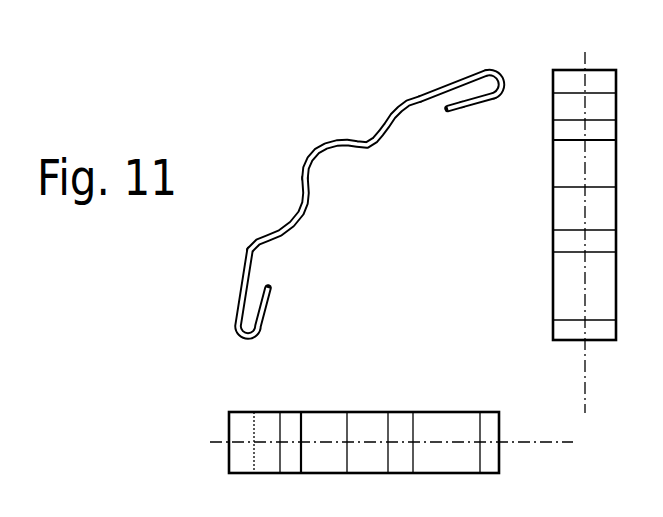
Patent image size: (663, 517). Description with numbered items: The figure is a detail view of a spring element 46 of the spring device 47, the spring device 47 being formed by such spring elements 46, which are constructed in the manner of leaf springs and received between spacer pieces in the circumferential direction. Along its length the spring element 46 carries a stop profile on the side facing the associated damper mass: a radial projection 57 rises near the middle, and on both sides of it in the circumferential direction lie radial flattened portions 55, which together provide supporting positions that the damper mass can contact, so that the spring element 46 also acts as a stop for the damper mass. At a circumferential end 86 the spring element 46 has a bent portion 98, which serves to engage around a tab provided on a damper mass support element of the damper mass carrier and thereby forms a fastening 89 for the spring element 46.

The spring element 46 is at (401, 102).
The spring device 47 is at (254, 252).
The radial flattened portion 55 is at (241, 277).
The radial projection 57 is at (307, 156).
The circumferential end 86 is at (502, 78).
The fastening 89 is at (457, 113).
The bent portion 98 is at (478, 103).